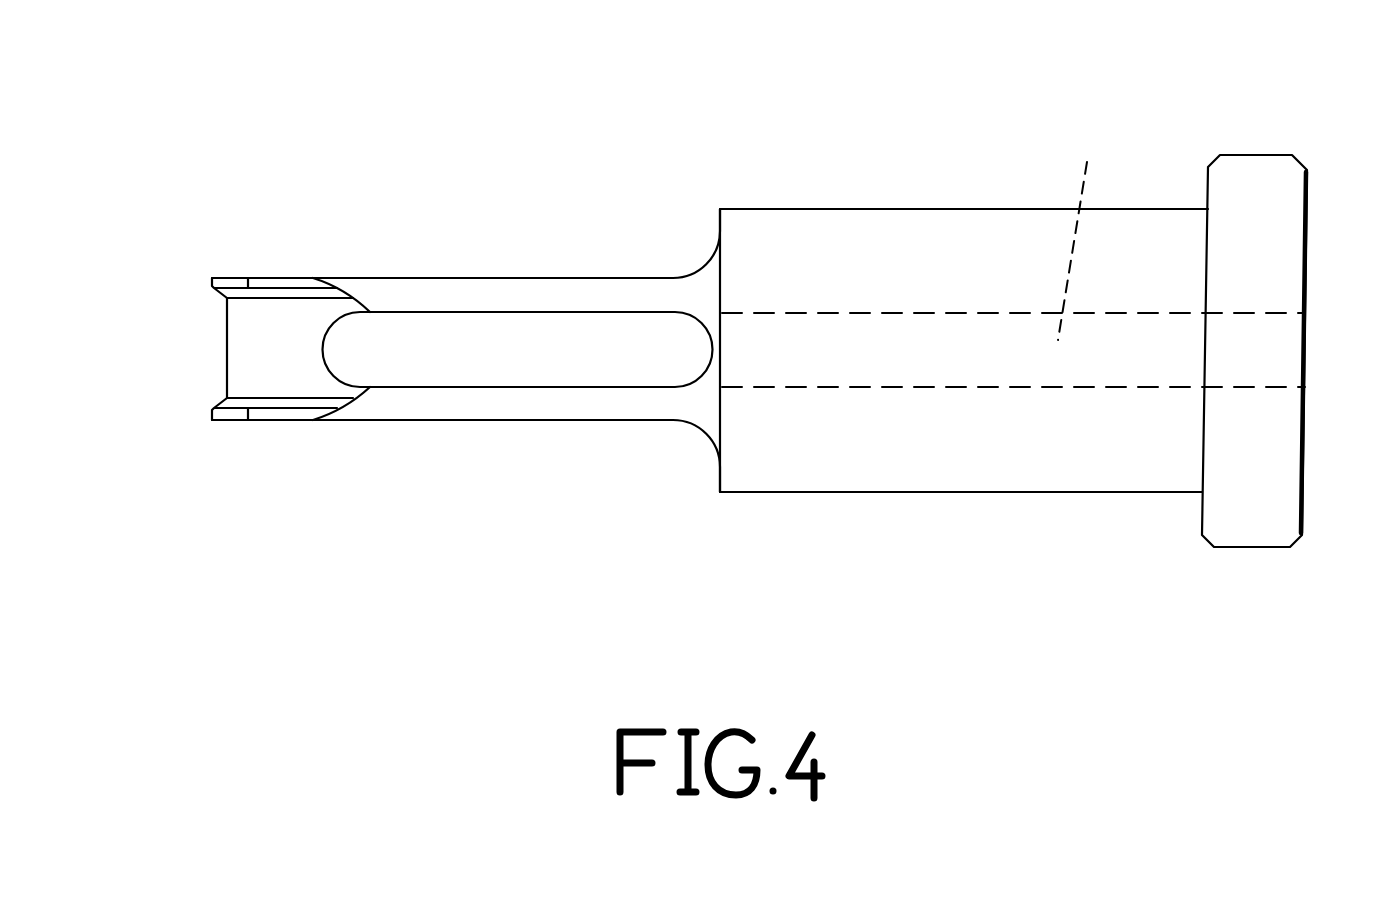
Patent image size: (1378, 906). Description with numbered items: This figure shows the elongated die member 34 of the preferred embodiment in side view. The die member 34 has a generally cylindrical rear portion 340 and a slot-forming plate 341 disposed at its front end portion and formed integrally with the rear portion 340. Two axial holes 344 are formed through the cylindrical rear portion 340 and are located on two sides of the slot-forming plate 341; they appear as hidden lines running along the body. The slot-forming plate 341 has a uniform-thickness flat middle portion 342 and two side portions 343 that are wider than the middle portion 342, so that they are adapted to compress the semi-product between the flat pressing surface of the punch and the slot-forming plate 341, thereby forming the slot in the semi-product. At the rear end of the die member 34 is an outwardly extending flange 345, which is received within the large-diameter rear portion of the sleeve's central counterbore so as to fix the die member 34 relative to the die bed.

The elongated die member 34 is at (870, 506).
The generally cylindrical rear portion 340 is at (945, 267).
The slot-forming plate 341 is at (473, 307).
The flat middle portion 342 is at (248, 362).
The side portions 343 is at (227, 285).
The axial holes 344 is at (1090, 222).
The outwardly extending flange 345 is at (1254, 171).